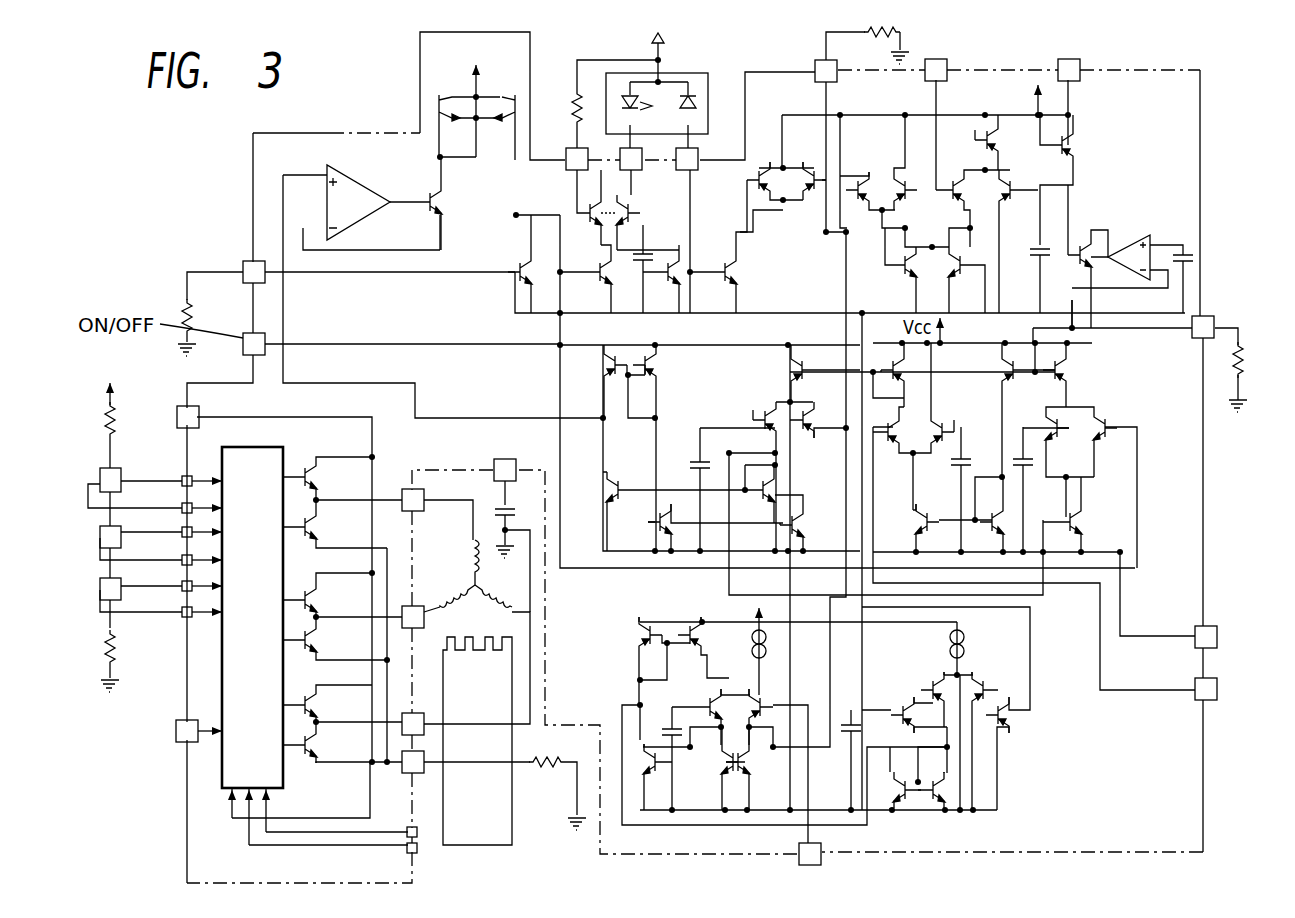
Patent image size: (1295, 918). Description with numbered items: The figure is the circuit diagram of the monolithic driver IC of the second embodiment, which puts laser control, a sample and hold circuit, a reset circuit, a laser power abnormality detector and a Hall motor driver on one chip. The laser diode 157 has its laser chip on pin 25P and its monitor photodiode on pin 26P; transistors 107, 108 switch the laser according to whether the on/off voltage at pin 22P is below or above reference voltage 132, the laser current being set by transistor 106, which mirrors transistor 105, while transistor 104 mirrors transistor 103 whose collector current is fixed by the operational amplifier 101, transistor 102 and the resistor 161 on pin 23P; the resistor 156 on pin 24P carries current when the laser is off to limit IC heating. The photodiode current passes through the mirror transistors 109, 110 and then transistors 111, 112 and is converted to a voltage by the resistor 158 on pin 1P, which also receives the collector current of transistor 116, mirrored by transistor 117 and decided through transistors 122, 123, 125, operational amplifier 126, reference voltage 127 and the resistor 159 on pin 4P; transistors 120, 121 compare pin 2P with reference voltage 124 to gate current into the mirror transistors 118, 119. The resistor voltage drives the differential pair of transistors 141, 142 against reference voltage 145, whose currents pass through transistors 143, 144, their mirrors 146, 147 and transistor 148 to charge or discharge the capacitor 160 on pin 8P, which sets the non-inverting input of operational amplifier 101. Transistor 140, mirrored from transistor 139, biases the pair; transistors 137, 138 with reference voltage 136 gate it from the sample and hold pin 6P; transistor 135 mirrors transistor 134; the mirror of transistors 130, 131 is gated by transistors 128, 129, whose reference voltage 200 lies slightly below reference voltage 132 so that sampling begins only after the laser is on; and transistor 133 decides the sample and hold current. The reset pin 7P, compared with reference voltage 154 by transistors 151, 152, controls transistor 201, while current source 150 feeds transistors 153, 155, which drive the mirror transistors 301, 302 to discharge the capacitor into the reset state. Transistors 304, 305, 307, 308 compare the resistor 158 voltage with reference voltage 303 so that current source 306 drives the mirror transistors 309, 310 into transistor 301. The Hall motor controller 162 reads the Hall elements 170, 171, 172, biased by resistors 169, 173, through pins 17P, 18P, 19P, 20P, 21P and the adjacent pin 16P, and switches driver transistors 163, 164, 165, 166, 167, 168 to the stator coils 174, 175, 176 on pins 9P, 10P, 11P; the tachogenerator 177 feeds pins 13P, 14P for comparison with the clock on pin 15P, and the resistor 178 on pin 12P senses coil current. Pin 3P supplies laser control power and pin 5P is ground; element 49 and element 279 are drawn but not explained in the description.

The pin 1P is at (815, 62).
The pin 2P is at (947, 64).
The pin 3P is at (1080, 64).
The pin 4P is at (1205, 316).
The pin 5P is at (1195, 628).
The pin 6P is at (1195, 684).
The reset pin 7P is at (799, 846).
The pin 8P is at (494, 464).
The pin 9P is at (424, 498).
The pin 10P is at (424, 621).
The pin 11P is at (424, 718).
The pin 12P is at (424, 757).
The pin 13P is at (418, 831).
The pin 14P is at (418, 852).
The pin 15P is at (177, 728).
The pin 16P is at (182, 610).
The pin 17P is at (182, 584).
The pin 18P is at (182, 558).
The pin 19P is at (182, 531).
The pin 20P is at (182, 506).
The pin 21P is at (182, 477).
The pin 22P is at (243, 355).
The pin 23P is at (243, 268).
The pin 24P is at (566, 168).
The pin 25P is at (638, 170).
The pin 26P is at (698, 165).
The transistor 49 is at (600, 382).
The operational amplifier 101 is at (347, 170).
The transistor 102 is at (441, 200).
The transistor 103 is at (445, 98).
The transistor 104 is at (512, 98).
The transistor 105 is at (518, 281).
The transistor 106 is at (611, 283).
The transistor 107 is at (578, 212).
The transistor 108 is at (631, 212).
The transistor 109 is at (678, 283).
The transistor 110 is at (738, 283).
The transistor 111 is at (762, 175).
The transistor 112 is at (810, 175).
The transistor 116 is at (858, 178).
The transistor 117 is at (908, 180).
The transistor 118 is at (907, 281).
The transistor 119 is at (958, 281).
The transistor 120 is at (958, 178).
The transistor 121 is at (1012, 178).
The transistor 122 is at (992, 145).
The transistor 123 is at (1073, 148).
The reference voltage 124 is at (1030, 258).
The transistor 125 is at (1078, 245).
The operational amplifier 126 is at (1138, 273).
The reference voltage 127 is at (1183, 252).
The transistor 128 is at (1108, 427).
The transistor 129 is at (1053, 427).
The transistor 130 is at (1077, 375).
The transistor 131 is at (1003, 375).
The reference voltage 132 is at (645, 256).
The transistor 133 is at (1082, 524).
The transistor 134 is at (1005, 521).
The transistor 135 is at (916, 523).
The reference voltage 136 is at (961, 445).
The transistor 137 is at (945, 450).
The transistor 138 is at (892, 450).
The transistor 139 is at (905, 375).
The transistor 140 is at (792, 368).
The transistor 141 is at (816, 418).
The transistor 142 is at (772, 418).
The transistor 143 is at (812, 522).
The transistor 144 is at (790, 488).
The reference voltage 145 is at (698, 460).
The transistor 146 is at (664, 510).
The transistor 147 is at (618, 484).
The transistor 148 is at (657, 380).
The current source 150 is at (770, 644).
The transistor 151 is at (765, 692).
The transistor 152 is at (715, 690).
The transistor 153 is at (722, 772).
The reference voltage 154 is at (664, 732).
The transistor 155 is at (678, 764).
The resistor 156 is at (574, 120).
The laser diode 157 is at (613, 73).
The resistor 158 is at (895, 31).
The resistor 159 is at (1250, 356).
The capacitor 160 is at (496, 517).
The resistor 161 is at (184, 300).
The Hall motor controller 162 is at (283, 450).
The driver transistor 163 is at (326, 482).
The driver transistor 164 is at (324, 531).
The driver transistor 165 is at (324, 601).
The driver transistor 166 is at (326, 642).
The driver transistor 167 is at (326, 707).
The driver transistor 168 is at (326, 747).
The resistor 169 is at (106, 420).
The Hall element 170 is at (98, 478).
The Hall element 171 is at (98, 536).
The Hall element 172 is at (98, 588).
The resistor 173 is at (106, 632).
The stator coil 174 is at (470, 550).
The stator coil 175 is at (445, 597).
The stator coil 176 is at (498, 602).
The tachogenerator 177 is at (487, 652).
The resistor 178 is at (550, 772).
The reference voltage 200 is at (1021, 456).
The transistor 201 is at (760, 772).
The microprocessor input pin 279 is at (180, 408).
The transistor 301 is at (645, 630).
The transistor 302 is at (708, 630).
The reference voltage 303 is at (858, 726).
The transistor 304 is at (910, 708).
The transistor 305 is at (943, 688).
The current source 306 is at (966, 641).
The transistor 307 is at (977, 688).
The transistor 308 is at (1005, 706).
The transistor 309 is at (896, 812).
The transistor 310 is at (950, 812).